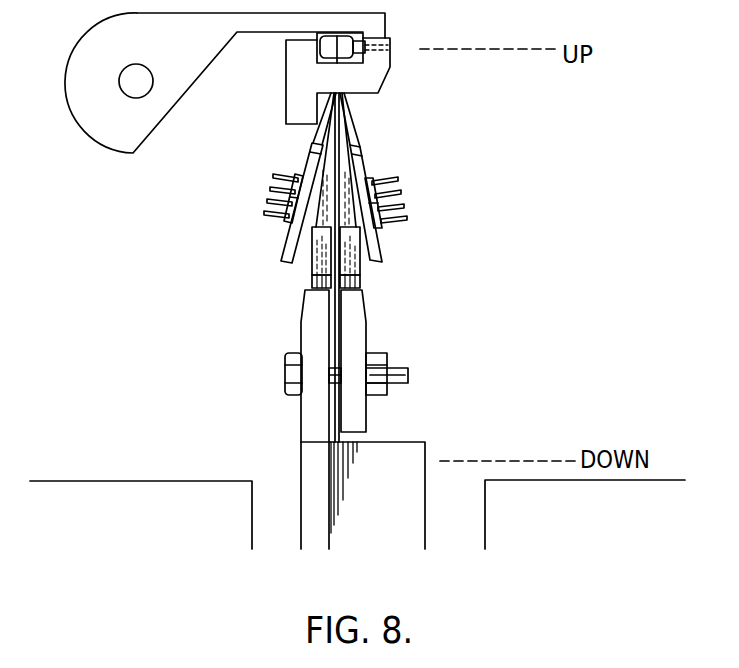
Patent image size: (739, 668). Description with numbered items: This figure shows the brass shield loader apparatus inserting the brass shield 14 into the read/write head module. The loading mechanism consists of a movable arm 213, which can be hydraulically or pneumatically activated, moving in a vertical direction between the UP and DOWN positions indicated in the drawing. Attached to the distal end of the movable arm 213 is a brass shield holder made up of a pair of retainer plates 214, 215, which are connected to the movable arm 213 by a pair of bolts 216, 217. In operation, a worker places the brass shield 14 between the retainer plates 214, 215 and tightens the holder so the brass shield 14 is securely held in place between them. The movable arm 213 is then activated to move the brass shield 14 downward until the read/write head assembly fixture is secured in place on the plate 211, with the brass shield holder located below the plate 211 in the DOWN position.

The brass shield 14 is at (340, 247).
The plate 211 is at (170, 481).
The movable arm 213 is at (305, 423).
The retainer plate 214 is at (312, 268).
The retainer plate 215 is at (362, 268).
The bolt 216 is at (408, 367).
The bolt 217 is at (387, 392).